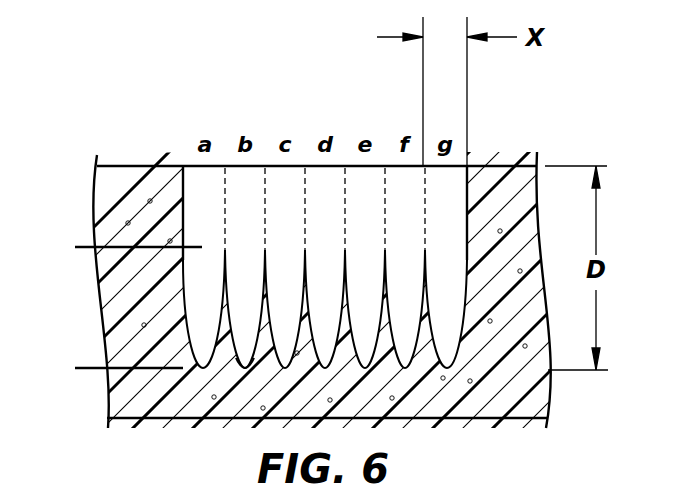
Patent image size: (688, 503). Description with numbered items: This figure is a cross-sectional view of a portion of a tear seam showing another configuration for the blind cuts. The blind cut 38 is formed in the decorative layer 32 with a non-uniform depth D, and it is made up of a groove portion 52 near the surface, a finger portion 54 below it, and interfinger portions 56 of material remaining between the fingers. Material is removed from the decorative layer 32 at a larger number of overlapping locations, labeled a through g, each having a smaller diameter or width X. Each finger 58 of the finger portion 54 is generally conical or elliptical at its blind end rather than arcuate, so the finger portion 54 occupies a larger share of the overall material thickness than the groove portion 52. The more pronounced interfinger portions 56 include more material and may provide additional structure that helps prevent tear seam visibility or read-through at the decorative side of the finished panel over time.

The decorative layer 32 is at (490, 182).
The blind cut 38 is at (195, 178).
The groove portion 52 is at (85, 165).
The finger portion 54 is at (85, 248).
The interfinger portions 56 is at (243, 348).
The finger 58 is at (247, 342).